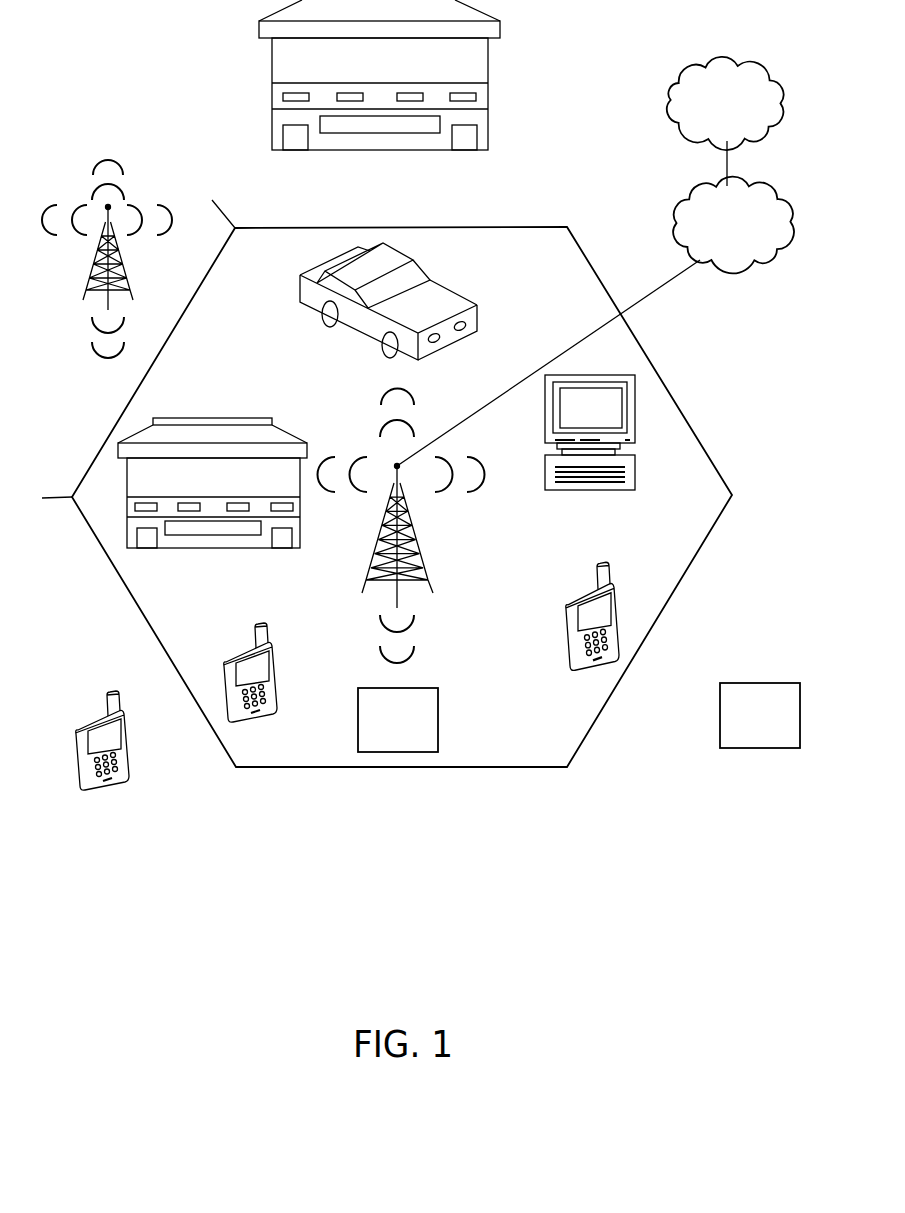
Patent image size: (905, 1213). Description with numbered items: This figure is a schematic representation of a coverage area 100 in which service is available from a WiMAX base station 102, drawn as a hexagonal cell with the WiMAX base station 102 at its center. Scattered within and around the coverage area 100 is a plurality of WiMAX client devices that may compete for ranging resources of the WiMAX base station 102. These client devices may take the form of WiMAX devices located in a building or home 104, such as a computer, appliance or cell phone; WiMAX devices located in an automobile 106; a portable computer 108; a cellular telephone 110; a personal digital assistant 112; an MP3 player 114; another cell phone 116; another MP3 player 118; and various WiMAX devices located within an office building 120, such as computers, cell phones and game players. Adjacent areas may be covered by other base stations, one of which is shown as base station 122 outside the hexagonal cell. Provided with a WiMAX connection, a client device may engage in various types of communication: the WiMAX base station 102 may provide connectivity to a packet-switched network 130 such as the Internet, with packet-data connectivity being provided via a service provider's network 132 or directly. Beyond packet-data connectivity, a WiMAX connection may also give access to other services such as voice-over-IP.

The coverage area 100 is at (462, 768).
The WiMAX base station 102 is at (425, 570).
The building or home 104 is at (215, 418).
The automobile 106 is at (477, 323).
The portable computer 108 is at (637, 478).
The cellular telephone 110 is at (570, 653).
The personal digital assistant 112 is at (275, 692).
The MP3 player 114 is at (439, 720).
The another cell phone 116 is at (126, 767).
The another MP3 player 118 is at (720, 735).
The office building 120 is at (488, 116).
The base station 122 is at (125, 285).
The packet-switched network 130 is at (675, 128).
The service provider's network 132 is at (678, 217).